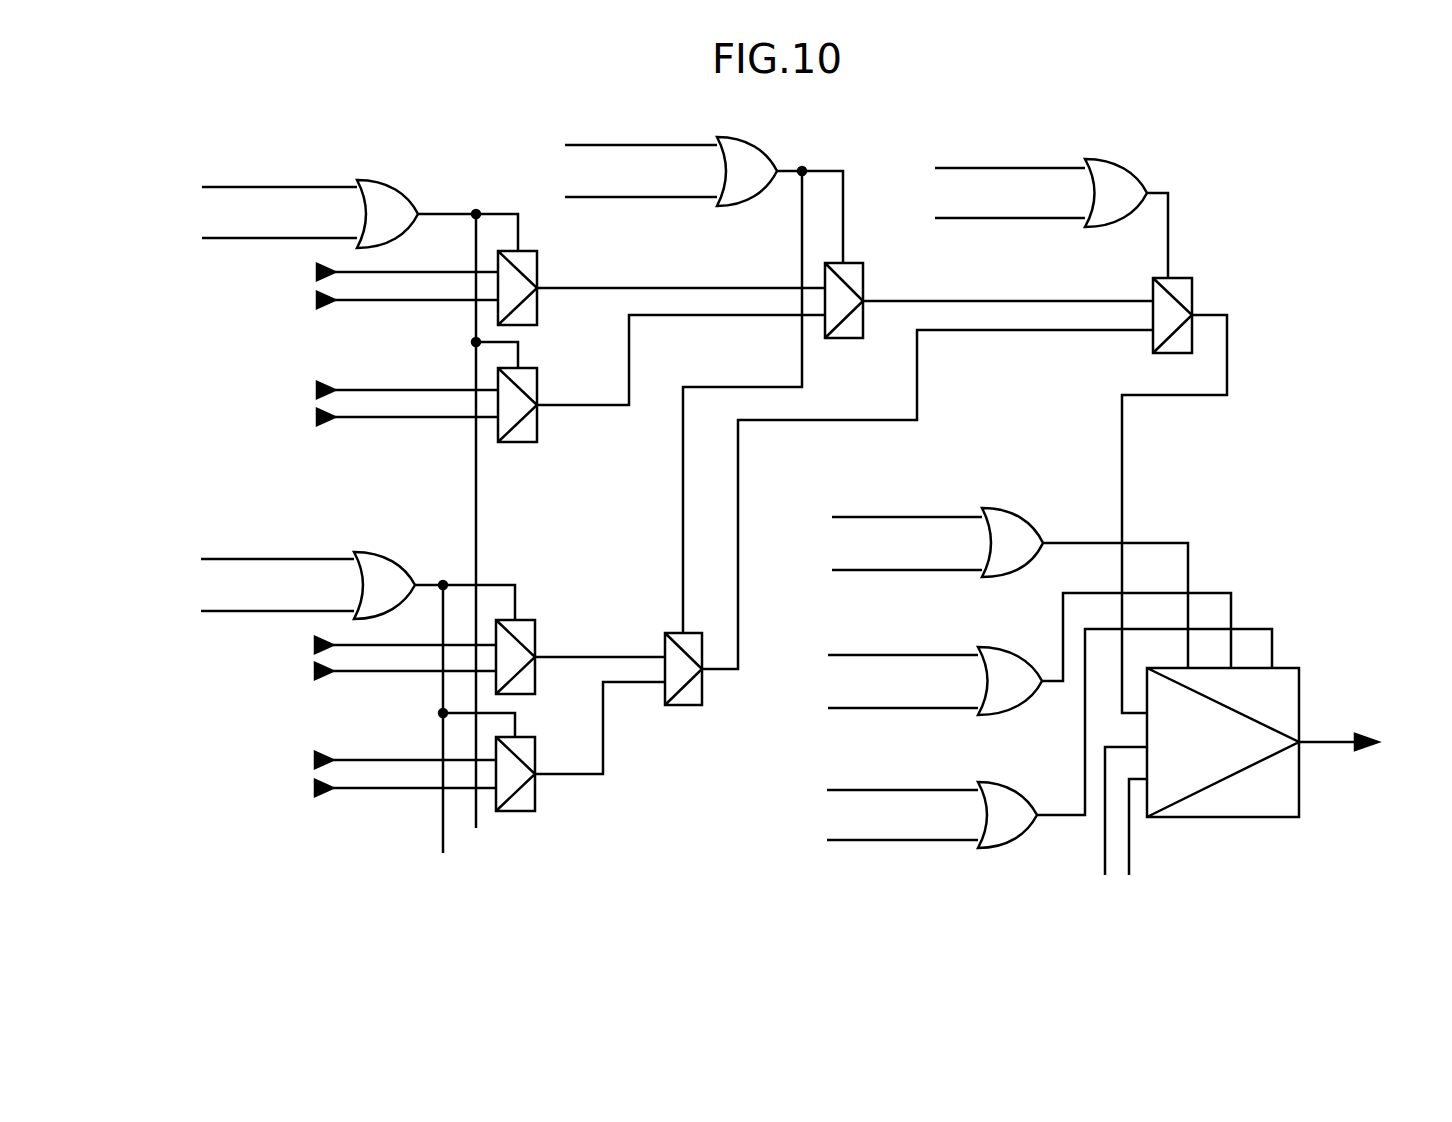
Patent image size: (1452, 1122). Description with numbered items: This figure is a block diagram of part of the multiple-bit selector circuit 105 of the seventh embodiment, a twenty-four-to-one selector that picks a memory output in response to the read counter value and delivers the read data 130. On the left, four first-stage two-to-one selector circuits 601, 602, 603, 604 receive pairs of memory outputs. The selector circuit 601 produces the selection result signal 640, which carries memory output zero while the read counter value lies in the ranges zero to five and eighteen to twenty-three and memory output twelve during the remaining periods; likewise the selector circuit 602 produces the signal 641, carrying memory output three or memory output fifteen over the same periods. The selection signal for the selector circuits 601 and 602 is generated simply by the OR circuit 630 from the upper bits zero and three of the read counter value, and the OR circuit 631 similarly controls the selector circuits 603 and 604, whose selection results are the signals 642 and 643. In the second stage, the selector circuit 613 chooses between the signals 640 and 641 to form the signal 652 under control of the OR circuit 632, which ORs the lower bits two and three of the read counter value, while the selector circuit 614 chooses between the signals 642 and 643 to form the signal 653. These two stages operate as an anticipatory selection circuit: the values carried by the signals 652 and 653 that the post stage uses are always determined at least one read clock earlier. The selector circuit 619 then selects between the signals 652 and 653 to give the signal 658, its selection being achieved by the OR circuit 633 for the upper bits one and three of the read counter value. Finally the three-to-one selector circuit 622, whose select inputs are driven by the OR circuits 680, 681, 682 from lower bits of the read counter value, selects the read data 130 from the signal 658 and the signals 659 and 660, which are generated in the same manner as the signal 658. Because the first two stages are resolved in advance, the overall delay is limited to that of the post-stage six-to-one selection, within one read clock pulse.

The selector circuit 105 is at (927, 85).
The read data 130 is at (1363, 719).
The 2-to-1 selector circuit 601 is at (539, 268).
The 2-to-1 selector circuit 602 is at (539, 384).
The 2-to-1 selector circuit 603 is at (537, 637).
The 2-to-1 selector circuit 604 is at (537, 751).
The 2-to-1 selector circuit 613 is at (866, 278).
The 2-to-1 selector circuit 614 is at (696, 629).
The 2-to-1 selector circuit 619 is at (1196, 293).
The 3-to-1 selector circuit 622 is at (1234, 819).
The OR circuit 630 is at (382, 182).
The OR circuit 631 is at (376, 553).
The OR circuit 632 is at (741, 136).
The OR circuit 633 is at (1111, 158).
The selection result signal 640 is at (710, 287).
The selection result signal 641 is at (714, 316).
The selection result signal 642 is at (630, 653).
The selection result signal 643 is at (634, 694).
The selection result signal 652 is at (1084, 301).
The selection result signal 653 is at (1088, 333).
The selection result signal 658 is at (1124, 473).
The selection result signal 659 is at (1101, 862).
The selection result signal 660 is at (1133, 862).
The OR circuit 680 is at (1008, 510).
The OR circuit 681 is at (1003, 648).
The OR circuit 682 is at (998, 782).